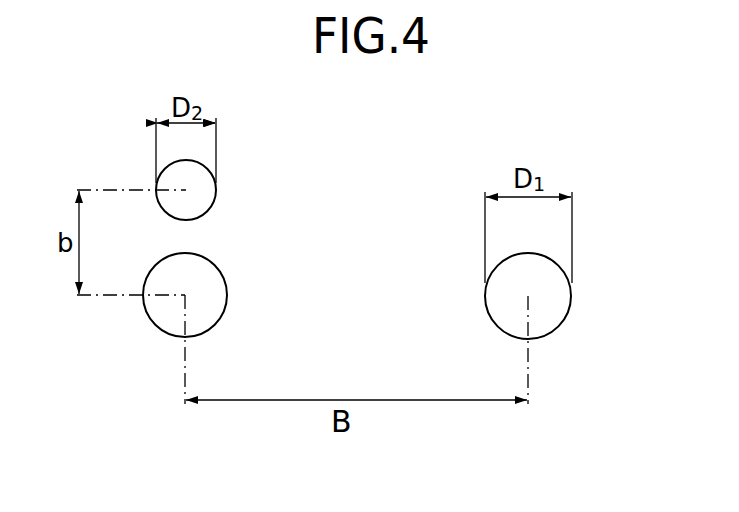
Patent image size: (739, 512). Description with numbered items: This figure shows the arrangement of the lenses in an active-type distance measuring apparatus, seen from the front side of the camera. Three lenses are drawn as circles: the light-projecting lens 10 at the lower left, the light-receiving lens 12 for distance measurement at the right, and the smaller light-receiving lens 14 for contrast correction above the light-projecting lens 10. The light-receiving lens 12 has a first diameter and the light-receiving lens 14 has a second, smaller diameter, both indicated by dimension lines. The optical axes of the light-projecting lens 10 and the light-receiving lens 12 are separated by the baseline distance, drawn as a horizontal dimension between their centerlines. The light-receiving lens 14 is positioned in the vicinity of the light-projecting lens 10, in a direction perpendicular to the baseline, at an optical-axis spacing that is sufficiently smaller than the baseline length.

The light-projecting lens 10 is at (226, 312).
The light-receiving lens for distance measurement 12 is at (566, 322).
The light-receiving lens for contrast correction 14 is at (215, 205).